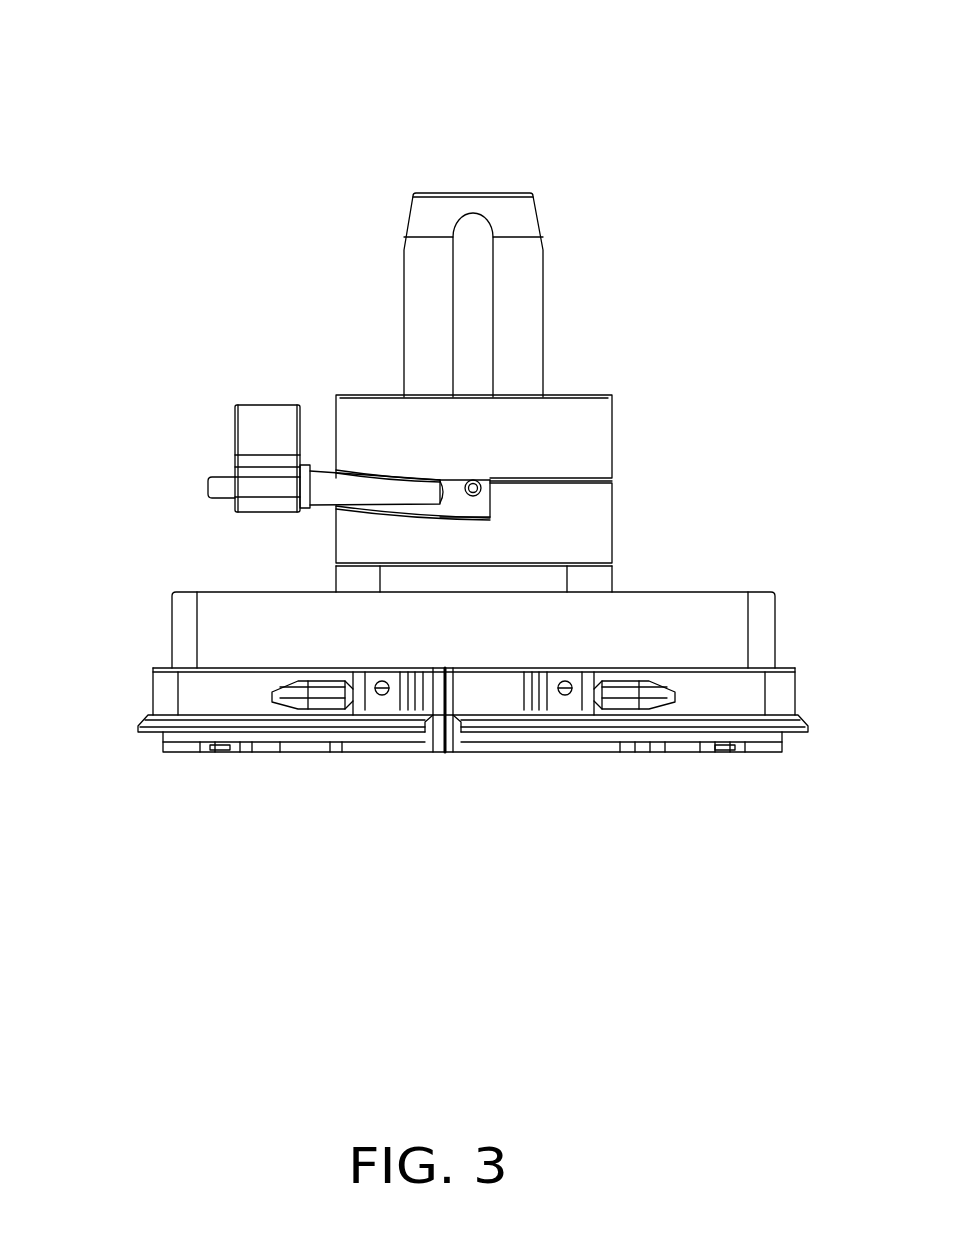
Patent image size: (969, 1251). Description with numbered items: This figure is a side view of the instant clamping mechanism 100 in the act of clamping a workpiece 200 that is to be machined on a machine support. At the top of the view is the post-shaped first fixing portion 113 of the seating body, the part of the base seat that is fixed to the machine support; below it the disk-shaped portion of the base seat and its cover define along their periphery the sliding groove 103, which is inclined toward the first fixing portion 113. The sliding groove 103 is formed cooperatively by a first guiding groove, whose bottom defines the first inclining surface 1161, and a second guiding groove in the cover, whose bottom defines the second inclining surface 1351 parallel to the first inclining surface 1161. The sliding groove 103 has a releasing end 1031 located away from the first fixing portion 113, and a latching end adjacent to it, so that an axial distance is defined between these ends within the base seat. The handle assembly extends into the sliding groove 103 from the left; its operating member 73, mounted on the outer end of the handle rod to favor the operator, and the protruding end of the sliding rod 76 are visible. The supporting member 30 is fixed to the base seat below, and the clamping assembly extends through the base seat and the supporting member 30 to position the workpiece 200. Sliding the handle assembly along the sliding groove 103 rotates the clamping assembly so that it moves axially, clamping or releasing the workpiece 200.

The instant clamping mechanism 100 is at (498, 73).
The first fixing portion 113 is at (524, 312).
The first inclining surface 1161 is at (432, 477).
The operating member 73 is at (262, 441).
The sliding rod 76 is at (223, 485).
The second inclining surface 1351 is at (413, 507).
The sliding groove 103 is at (447, 506).
The releasing end 1031 is at (492, 510).
The supporting member 30 is at (228, 637).
The workpiece 200 is at (158, 720).